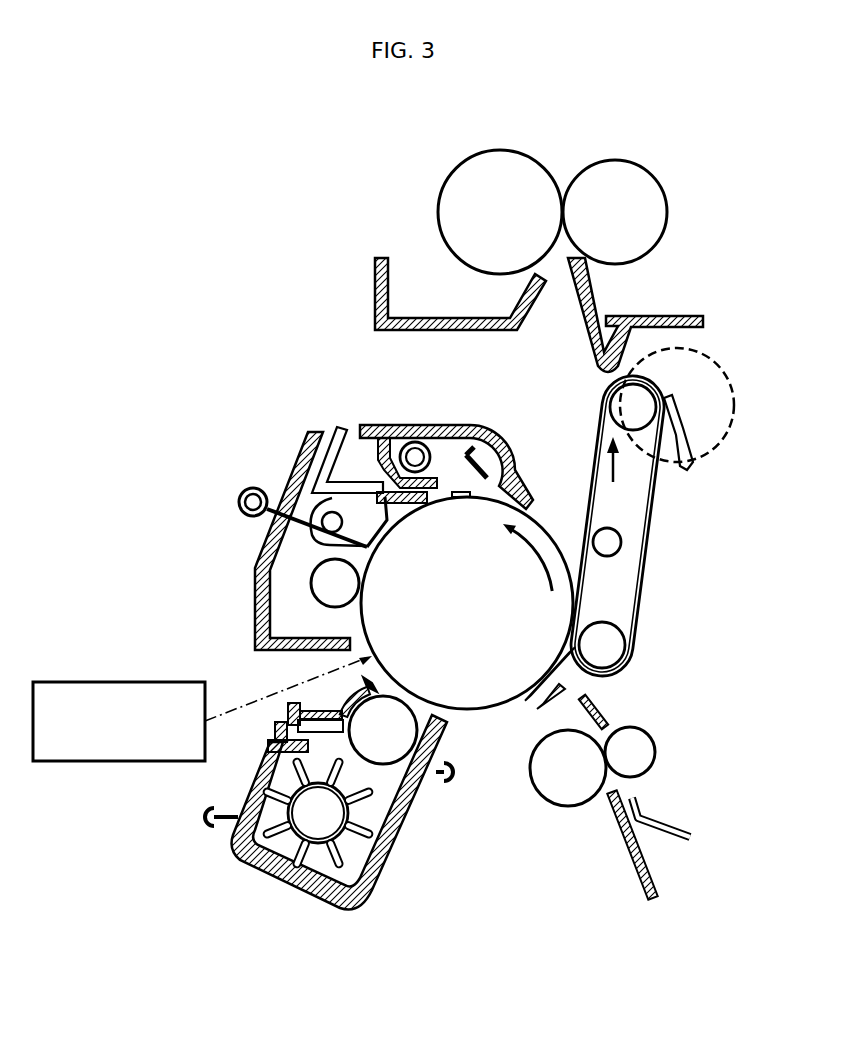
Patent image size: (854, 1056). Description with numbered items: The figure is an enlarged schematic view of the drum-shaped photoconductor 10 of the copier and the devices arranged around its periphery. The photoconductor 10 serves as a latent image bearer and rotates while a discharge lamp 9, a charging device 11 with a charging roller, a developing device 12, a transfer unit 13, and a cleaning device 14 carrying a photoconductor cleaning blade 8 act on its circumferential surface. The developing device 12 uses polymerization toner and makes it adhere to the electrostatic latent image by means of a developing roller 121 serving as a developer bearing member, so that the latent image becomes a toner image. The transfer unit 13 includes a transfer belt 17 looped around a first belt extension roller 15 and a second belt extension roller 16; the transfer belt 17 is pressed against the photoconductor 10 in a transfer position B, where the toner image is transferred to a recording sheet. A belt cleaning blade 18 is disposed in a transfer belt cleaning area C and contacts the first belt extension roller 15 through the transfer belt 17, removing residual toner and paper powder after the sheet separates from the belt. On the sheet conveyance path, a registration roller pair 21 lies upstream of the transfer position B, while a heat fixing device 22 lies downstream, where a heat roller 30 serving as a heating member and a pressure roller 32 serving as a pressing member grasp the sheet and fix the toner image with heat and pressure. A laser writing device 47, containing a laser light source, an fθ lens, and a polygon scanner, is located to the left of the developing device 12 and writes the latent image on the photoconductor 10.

The photoconductor cleaning blade 8 is at (407, 505).
The discharge lamp 9 is at (251, 488).
The photoconductor 10 is at (556, 533).
The charging device 11 is at (311, 583).
The developing device 12 is at (336, 793).
The developing roller 121 is at (383, 764).
The transfer unit 13 is at (663, 508).
The cleaning device 14 is at (446, 462).
The first belt extension roller 15 is at (610, 407).
The second belt extension roller 16 is at (619, 650).
The transfer belt 17 is at (652, 500).
The belt cleaning blade 18 is at (678, 408).
The registration roller pair 21 is at (656, 750).
The heat fixing device 22 is at (361, 296).
The heat roller 30 is at (503, 150).
The pressure roller 32 is at (619, 161).
The laser writing device 47 is at (120, 682).
The transfer position B is at (606, 595).
The transfer belt cleaning area C is at (736, 405).